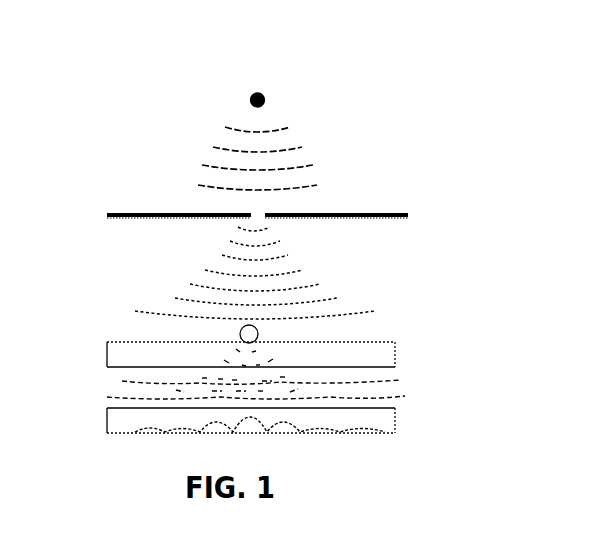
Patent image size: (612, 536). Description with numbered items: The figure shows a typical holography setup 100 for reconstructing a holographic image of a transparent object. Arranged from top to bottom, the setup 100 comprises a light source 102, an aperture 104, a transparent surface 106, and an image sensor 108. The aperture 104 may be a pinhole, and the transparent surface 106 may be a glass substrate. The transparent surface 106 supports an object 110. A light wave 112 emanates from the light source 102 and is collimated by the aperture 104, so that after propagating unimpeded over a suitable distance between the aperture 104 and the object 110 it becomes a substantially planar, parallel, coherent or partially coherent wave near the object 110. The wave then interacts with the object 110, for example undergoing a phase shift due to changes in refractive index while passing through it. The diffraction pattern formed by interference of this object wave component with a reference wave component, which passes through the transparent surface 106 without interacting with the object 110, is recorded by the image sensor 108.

The setup 100 is at (410, 74).
The light source 102 is at (251, 100).
The aperture 104 is at (205, 215).
The transparent surface 106 is at (205, 343).
The image sensor 108 is at (150, 408).
The object 110 is at (258, 332).
The light wave 112 is at (317, 186).